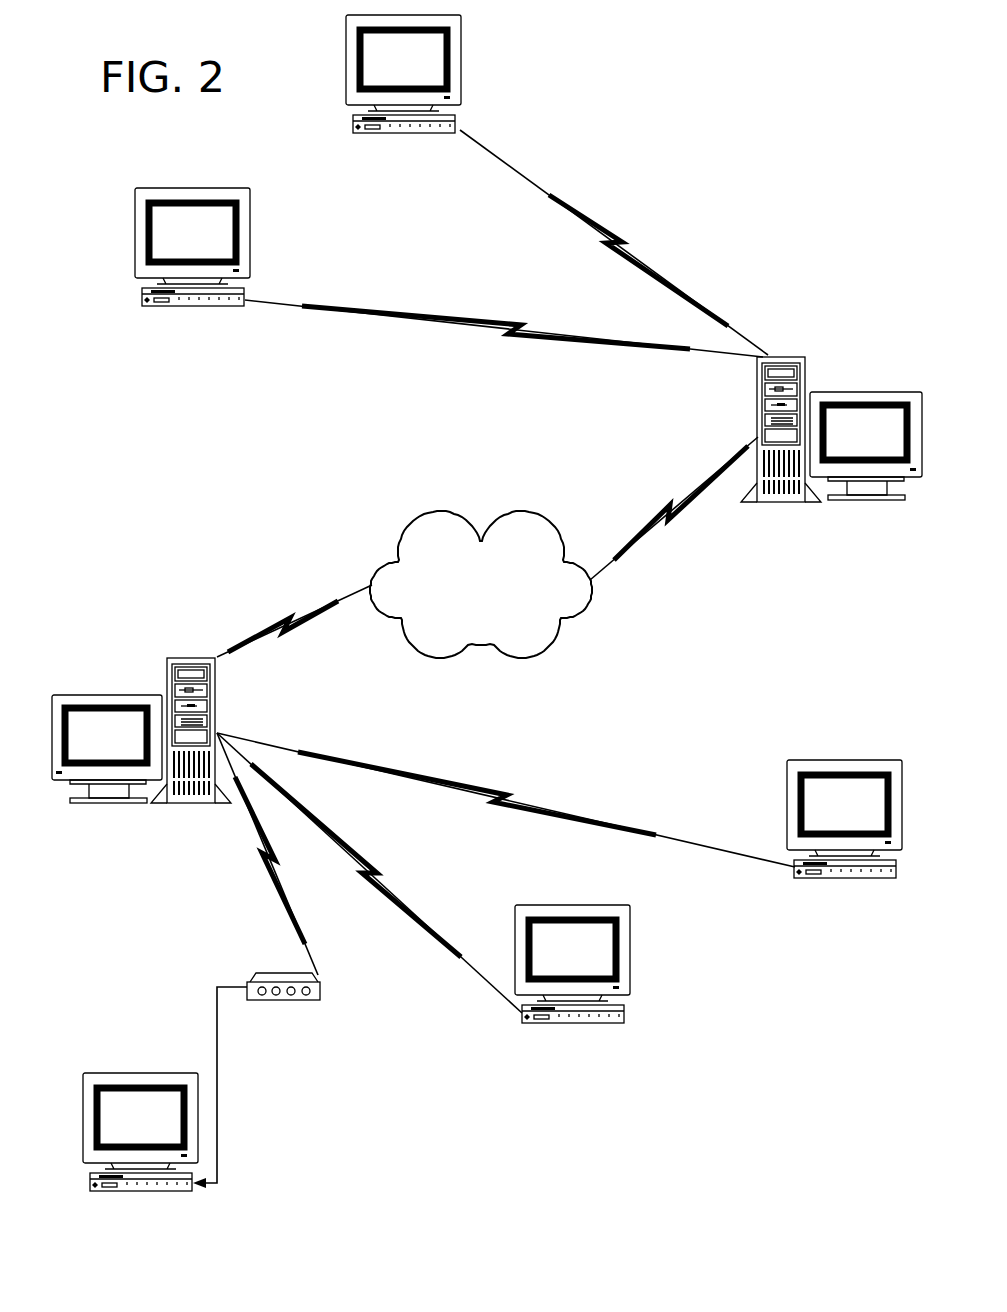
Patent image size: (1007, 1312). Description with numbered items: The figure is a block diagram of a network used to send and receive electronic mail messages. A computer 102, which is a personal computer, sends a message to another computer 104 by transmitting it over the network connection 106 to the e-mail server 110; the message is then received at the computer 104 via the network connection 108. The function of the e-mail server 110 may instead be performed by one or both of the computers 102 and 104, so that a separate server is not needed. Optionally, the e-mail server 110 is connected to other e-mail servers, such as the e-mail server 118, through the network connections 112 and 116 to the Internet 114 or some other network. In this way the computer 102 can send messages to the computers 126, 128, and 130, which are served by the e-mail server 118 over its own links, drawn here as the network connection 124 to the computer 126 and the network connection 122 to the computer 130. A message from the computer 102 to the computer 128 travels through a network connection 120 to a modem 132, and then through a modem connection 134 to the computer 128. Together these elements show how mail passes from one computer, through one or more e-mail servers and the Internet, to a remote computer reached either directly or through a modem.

The computer 102 is at (462, 50).
The computer 104 is at (250, 238).
The network connection 106 is at (552, 190).
The network connection 108 is at (473, 318).
The e-mail server 110 is at (857, 392).
The network connection 112 is at (658, 498).
The Internet 114 is at (452, 511).
The network connection 116 is at (341, 594).
The e-mail server 118 is at (178, 658).
The network connection 120 is at (289, 906).
The network connection 122 is at (460, 957).
The network connection 124 is at (593, 820).
The computer 126 is at (860, 760).
The computer 128 is at (130, 1073).
The computer 130 is at (630, 933).
The modem 132 is at (320, 997).
The modem connection 134 is at (217, 1100).